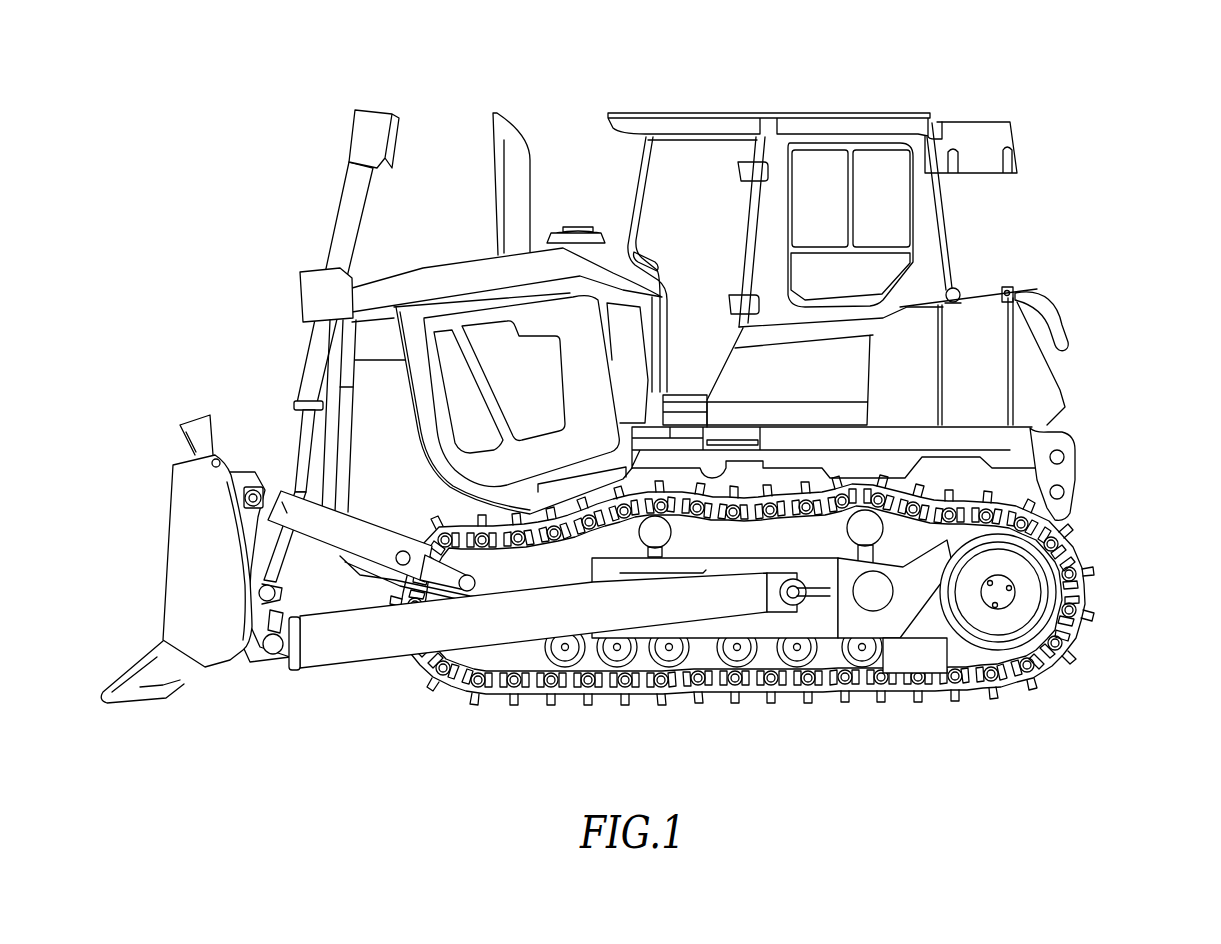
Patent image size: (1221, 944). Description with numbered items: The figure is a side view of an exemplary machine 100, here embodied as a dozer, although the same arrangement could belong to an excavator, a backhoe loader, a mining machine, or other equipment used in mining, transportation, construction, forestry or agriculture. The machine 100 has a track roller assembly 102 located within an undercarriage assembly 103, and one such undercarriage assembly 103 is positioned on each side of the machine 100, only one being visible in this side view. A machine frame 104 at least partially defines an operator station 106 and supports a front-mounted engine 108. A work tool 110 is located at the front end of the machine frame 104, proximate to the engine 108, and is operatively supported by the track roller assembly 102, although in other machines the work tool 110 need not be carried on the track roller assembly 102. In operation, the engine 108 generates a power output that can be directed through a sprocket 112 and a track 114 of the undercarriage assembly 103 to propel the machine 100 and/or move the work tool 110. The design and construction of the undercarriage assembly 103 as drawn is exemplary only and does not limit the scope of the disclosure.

The machine 100 is at (162, 124).
The track roller assembly 102 is at (1050, 703).
The undercarriage assembly 103 is at (1100, 509).
The machine frame 104 is at (1030, 433).
The operator station 106 is at (932, 223).
The engine 108 is at (547, 386).
The work tool 110 is at (178, 551).
The sprocket 112 is at (1025, 618).
The track 114 is at (561, 714).